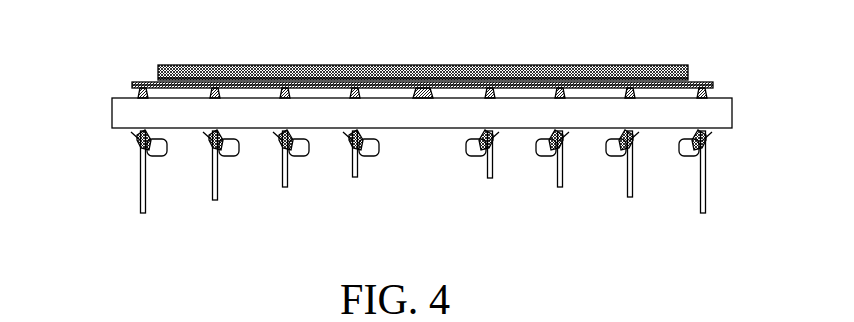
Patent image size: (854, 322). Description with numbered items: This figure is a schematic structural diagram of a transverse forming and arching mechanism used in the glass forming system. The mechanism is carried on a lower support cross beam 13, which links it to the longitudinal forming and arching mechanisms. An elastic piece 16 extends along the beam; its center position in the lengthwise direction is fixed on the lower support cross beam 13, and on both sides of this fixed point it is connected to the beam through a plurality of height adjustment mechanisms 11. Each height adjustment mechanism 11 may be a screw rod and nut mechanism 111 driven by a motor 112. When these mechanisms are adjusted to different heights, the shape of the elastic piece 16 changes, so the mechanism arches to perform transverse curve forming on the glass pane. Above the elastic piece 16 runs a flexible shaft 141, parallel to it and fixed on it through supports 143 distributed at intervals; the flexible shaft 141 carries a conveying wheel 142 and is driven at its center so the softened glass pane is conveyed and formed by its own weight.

The height adjustment mechanism 11 is at (140, 184).
The screw rod and nut mechanism 111 is at (212, 190).
The motor 112 is at (233, 156).
The lower support cross beam 13 is at (133, 113).
The elastic piece 16 is at (141, 88).
The flexible shaft 141 is at (688, 70).
The conveying wheel 142 is at (652, 82).
The support 143 is at (647, 76).